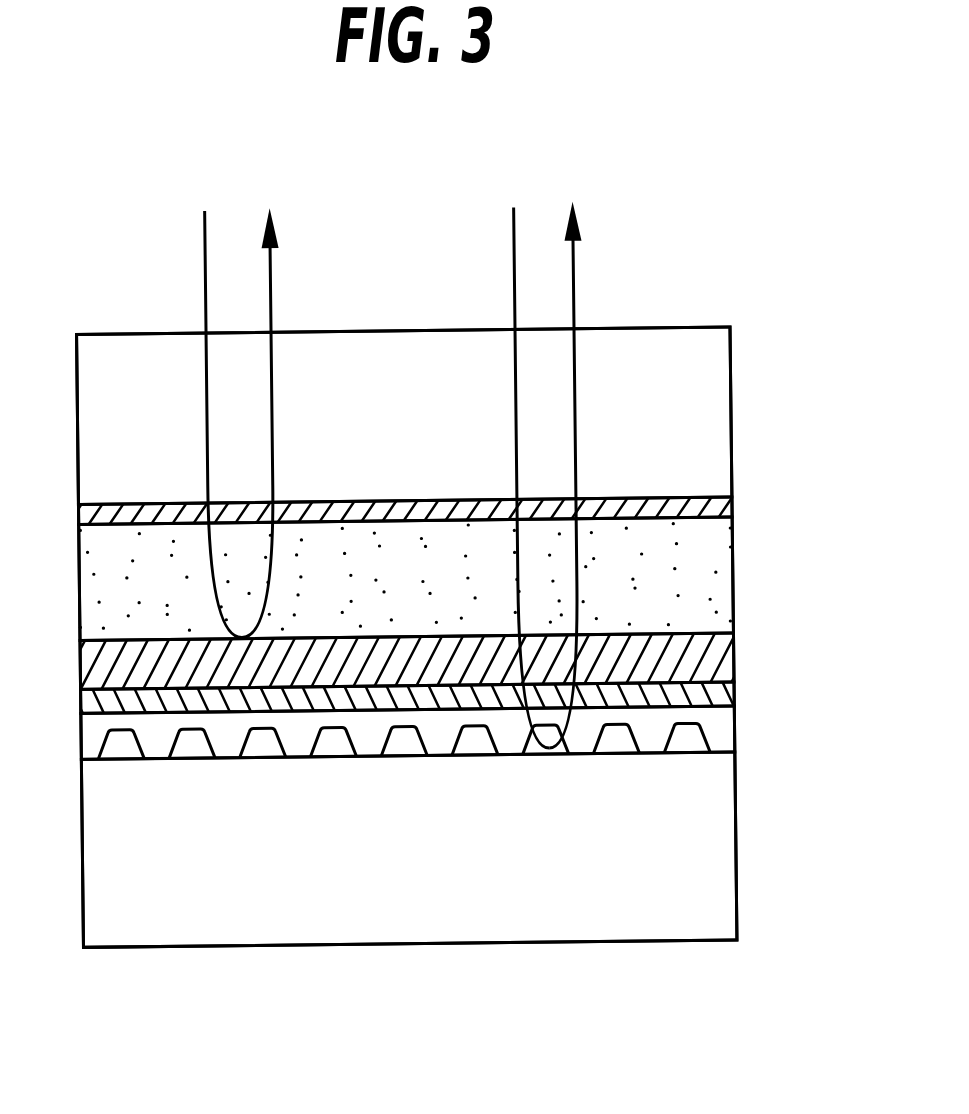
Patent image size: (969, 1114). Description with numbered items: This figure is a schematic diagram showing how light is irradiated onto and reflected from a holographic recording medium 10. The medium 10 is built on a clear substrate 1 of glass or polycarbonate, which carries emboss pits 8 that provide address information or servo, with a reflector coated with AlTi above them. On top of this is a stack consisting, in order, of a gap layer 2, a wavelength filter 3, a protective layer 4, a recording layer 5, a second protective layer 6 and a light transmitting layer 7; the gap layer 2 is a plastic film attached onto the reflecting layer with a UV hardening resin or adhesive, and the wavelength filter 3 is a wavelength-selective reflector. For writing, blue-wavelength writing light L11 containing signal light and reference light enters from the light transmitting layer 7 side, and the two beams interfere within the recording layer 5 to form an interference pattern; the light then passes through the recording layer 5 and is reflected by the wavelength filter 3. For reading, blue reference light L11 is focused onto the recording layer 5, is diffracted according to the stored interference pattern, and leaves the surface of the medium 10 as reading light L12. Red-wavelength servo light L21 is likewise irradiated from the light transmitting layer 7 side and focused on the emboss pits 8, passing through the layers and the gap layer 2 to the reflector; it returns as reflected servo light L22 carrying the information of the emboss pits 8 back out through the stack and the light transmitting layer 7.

The clear substrate 1 is at (737, 845).
The gap layer 2 is at (733, 727).
The wavelength filter 3 is at (733, 689).
The protective layer 4 is at (733, 656).
The recording layer 5 is at (733, 573).
The protective layer 6 is at (730, 504).
The light transmitting layer 7 is at (730, 415).
The emboss pits 8 is at (120, 740).
The holographic recording medium 10 is at (757, 262).
The writing light L11 is at (205, 288).
The reading light L12 is at (272, 298).
The servo light L21 is at (513, 250).
The reflected light L22 is at (575, 278).